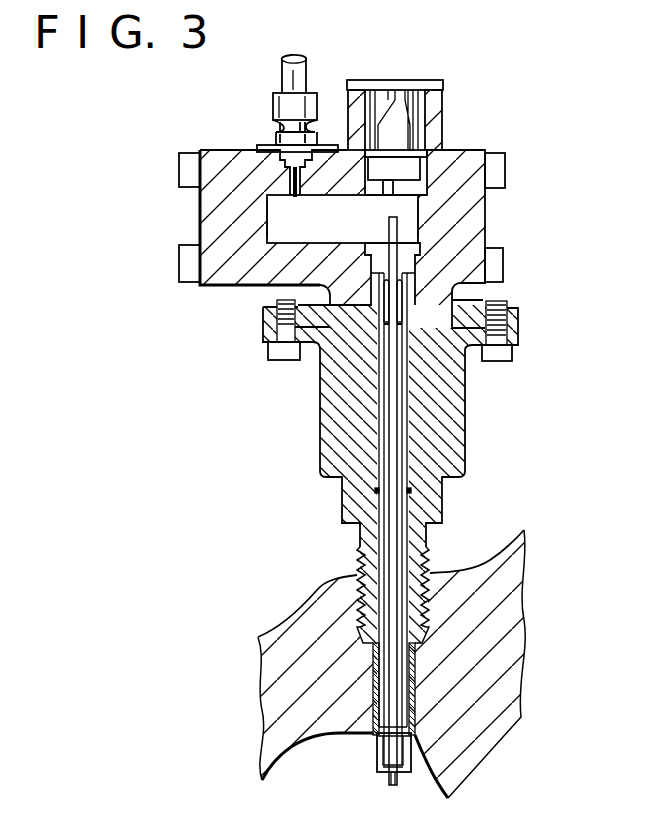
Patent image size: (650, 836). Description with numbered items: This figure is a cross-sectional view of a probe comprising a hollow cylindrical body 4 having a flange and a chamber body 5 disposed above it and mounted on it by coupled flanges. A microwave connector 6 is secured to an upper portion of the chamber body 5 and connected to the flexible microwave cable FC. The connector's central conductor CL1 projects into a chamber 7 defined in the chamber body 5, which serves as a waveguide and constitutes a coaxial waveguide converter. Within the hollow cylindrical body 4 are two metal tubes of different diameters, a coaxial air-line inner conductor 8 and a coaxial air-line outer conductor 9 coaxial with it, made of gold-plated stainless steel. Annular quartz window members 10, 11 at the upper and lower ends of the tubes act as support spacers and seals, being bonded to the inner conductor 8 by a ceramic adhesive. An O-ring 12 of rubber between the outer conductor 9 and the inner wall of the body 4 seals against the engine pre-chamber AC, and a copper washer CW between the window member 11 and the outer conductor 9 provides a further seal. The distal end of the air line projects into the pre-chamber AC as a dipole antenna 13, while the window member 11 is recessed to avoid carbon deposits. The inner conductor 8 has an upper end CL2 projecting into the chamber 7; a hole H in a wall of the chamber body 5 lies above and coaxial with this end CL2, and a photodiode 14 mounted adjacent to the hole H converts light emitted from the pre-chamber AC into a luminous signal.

The hollow cylindrical body 4 is at (440, 405).
The chamber body 5 is at (240, 170).
The microwave connector 6 is at (286, 108).
The chamber 7 is at (287, 233).
The coaxial air-line inner conductor 8 is at (390, 512).
The coaxial air-line outer conductor 9 is at (378, 420).
The annular window member 10 is at (398, 303).
The annular window member 11 is at (400, 752).
The O-ring 12 is at (410, 492).
The dipole antenna 13 is at (393, 786).
The photodiode 14 is at (393, 187).
The hole H is at (422, 180).
The flexible microwave cable FC is at (305, 75).
The central conductor CL1 is at (267, 213).
The upper end of the inner conductor CL2 is at (423, 225).
The engine pre-chamber AC is at (318, 770).
The copper washer CW is at (407, 727).